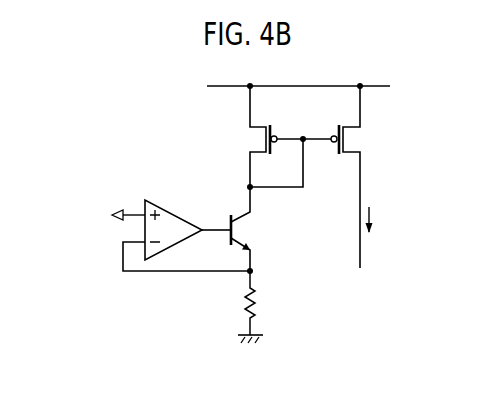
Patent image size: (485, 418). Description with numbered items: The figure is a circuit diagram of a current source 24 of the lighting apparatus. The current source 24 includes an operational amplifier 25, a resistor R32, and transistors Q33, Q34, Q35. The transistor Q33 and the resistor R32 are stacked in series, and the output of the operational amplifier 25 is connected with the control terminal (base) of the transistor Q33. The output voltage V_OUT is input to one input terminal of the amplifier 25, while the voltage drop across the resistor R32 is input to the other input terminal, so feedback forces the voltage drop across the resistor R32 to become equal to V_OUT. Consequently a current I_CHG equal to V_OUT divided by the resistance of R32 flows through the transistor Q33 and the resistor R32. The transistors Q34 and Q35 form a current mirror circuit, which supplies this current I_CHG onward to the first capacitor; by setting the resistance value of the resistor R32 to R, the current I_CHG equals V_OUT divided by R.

The current source 24 is at (242, 234).
The operational amplifier 25 is at (176, 207).
The transistor Q33 is at (255, 231).
The transistor Q34 is at (247, 139).
The transistor Q35 is at (363, 140).
The resistor R32 is at (259, 306).